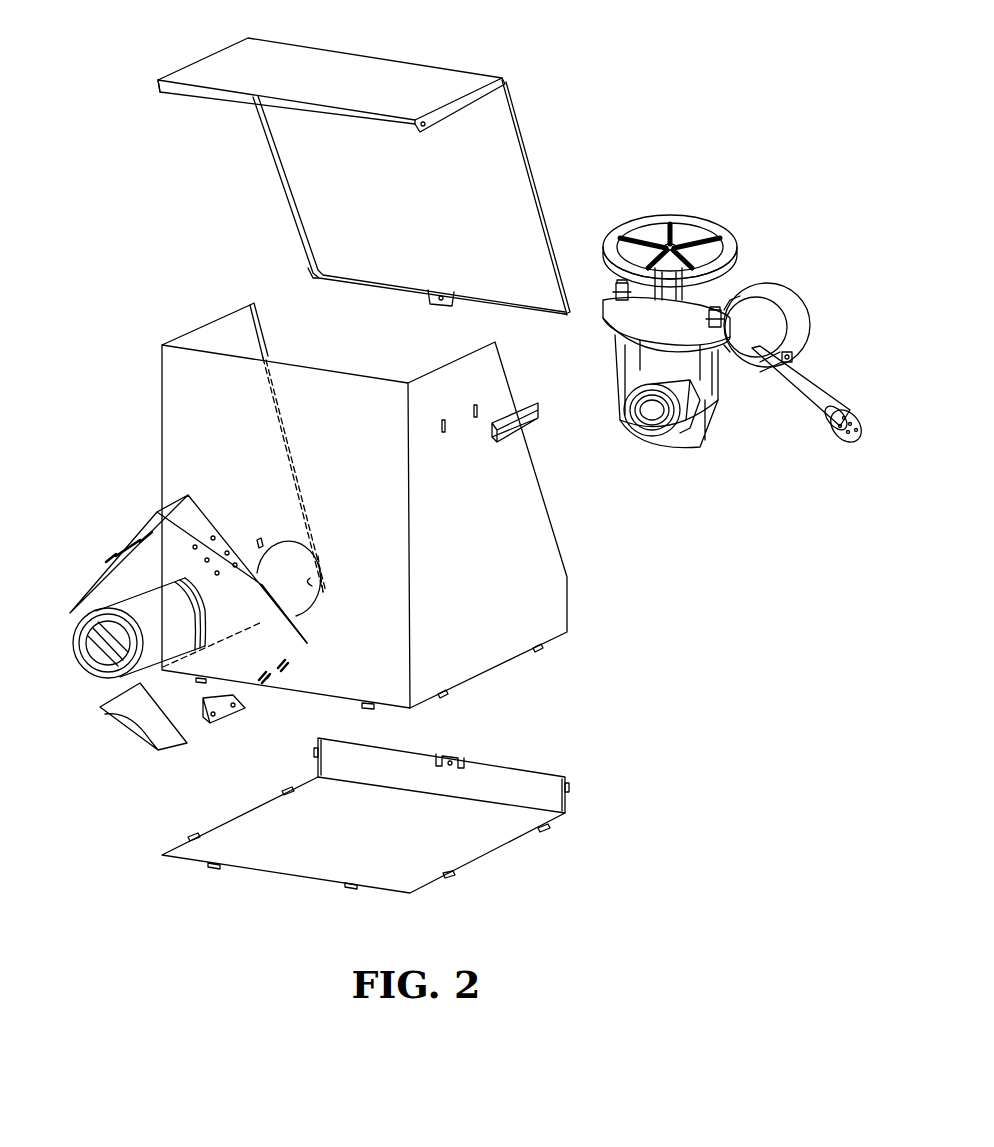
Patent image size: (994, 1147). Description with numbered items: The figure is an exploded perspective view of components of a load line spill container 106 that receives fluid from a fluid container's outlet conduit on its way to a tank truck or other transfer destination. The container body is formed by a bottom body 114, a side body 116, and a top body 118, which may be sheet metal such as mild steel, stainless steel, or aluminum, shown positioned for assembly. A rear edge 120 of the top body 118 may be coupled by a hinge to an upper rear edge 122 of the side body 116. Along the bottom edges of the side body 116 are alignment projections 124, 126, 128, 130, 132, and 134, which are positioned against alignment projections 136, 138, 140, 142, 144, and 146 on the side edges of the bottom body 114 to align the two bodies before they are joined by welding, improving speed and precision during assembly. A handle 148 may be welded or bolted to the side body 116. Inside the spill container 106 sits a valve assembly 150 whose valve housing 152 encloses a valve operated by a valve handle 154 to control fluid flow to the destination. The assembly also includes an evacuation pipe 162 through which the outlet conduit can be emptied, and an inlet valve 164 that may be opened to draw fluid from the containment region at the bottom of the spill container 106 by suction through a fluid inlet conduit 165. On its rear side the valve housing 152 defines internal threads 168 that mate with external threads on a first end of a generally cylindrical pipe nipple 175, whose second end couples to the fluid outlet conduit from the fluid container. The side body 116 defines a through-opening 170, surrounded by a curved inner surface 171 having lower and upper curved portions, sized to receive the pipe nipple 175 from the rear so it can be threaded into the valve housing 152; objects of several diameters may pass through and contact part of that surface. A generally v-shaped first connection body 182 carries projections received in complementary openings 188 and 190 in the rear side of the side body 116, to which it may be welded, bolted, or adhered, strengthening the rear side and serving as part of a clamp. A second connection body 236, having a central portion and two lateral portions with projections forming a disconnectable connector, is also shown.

The load line spill container 106 is at (602, 68).
The bottom body 114 is at (518, 790).
The side body 116 is at (548, 602).
The top body 118 is at (422, 80).
The rear edge 120 is at (210, 90).
The upper rear edge 122 is at (207, 352).
The alignment projection 124 is at (538, 650).
The alignment projection 126 is at (443, 698).
The alignment projection 128 is at (368, 710).
The alignment projection 130 is at (204, 684).
The alignment projection 132 is at (196, 657).
The alignment projection 134 is at (291, 611).
The alignment projection 136 is at (545, 830).
The alignment projection 138 is at (451, 877).
The alignment projection 140 is at (349, 888).
The alignment projection 142 is at (212, 868).
The alignment projection 144 is at (190, 836).
The alignment projection 146 is at (284, 791).
The handle 148 is at (530, 406).
The valve assembly 150 is at (719, 328).
The valve housing 152 is at (660, 336).
The valve handle 154 is at (672, 215).
The evacuation pipe 162 is at (710, 285).
The inlet valve 164 is at (763, 374).
The fluid inlet conduit 165 is at (818, 390).
The internal threads 168 is at (650, 416).
The through-opening 170 is at (282, 586).
The curved inner surface 171 is at (318, 582).
The pipe nipple 175 is at (130, 596).
The first connection body 182 is at (152, 514).
The opening 188 is at (250, 532).
The opening 190 is at (312, 552).
The second connection body 236 is at (129, 722).